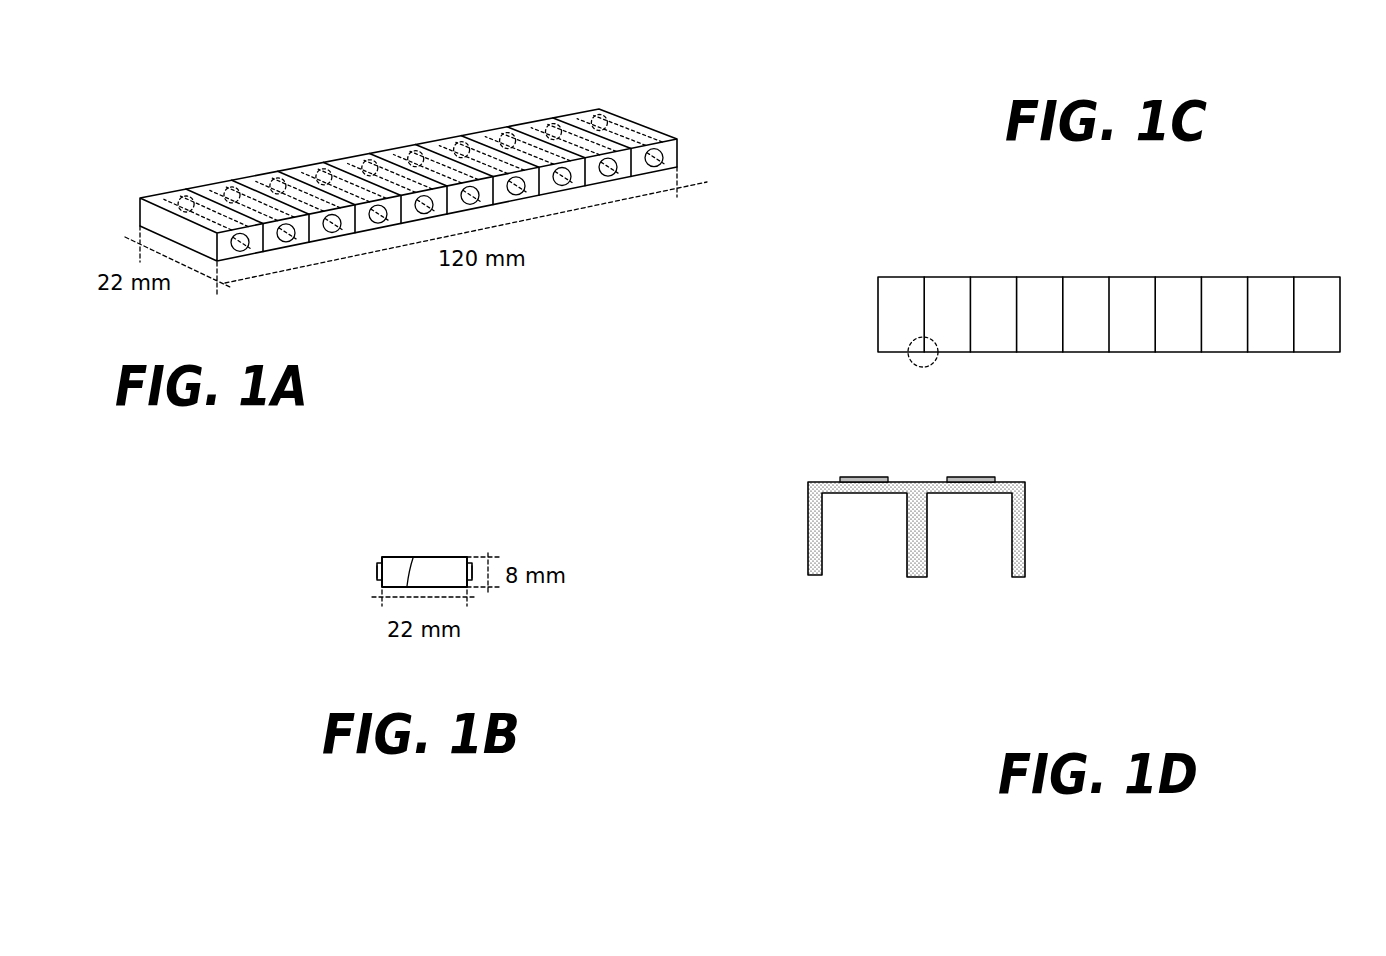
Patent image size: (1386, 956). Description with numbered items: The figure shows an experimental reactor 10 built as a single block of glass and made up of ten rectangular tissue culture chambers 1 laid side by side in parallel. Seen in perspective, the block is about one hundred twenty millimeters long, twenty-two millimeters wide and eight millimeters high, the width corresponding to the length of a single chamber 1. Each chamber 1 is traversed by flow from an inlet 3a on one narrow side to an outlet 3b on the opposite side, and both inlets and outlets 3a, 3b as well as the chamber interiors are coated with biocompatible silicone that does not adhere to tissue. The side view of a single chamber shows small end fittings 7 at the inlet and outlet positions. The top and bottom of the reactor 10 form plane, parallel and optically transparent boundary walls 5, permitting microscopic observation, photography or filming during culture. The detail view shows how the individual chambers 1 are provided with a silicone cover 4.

In FIG. 1A, the experimental reactor 10 is at (412, 164).
In FIG. 1C, the experimental reactor 10 is at (1109, 337).
In FIG. 1A, the tissue culture chamber 1 is at (575, 115).
In FIG. 1B, the tissue culture chamber 1 is at (425, 579).
In FIG. 1C, the tissue culture chamber 1 is at (1315, 277).
In FIG. 1D, the tissue culture chamber 1 is at (972, 567).
In FIG. 1A, the upper and lower boundary walls 5 is at (627, 125).
In FIG. 1B, the upper and lower boundary walls 5 is at (403, 557).
In FIG. 1A, the inlet 3a is at (667, 165).
In FIG. 1B, the inlet 3a is at (477, 575).
In FIG. 1A, the outlet 3b is at (387, 169).
In FIG. 1B, the outlet 3b is at (377, 572).
In FIG. 1B, the terminal 7 is at (473, 557).
In FIG. 1D, the silicone cover 4 is at (1025, 535).